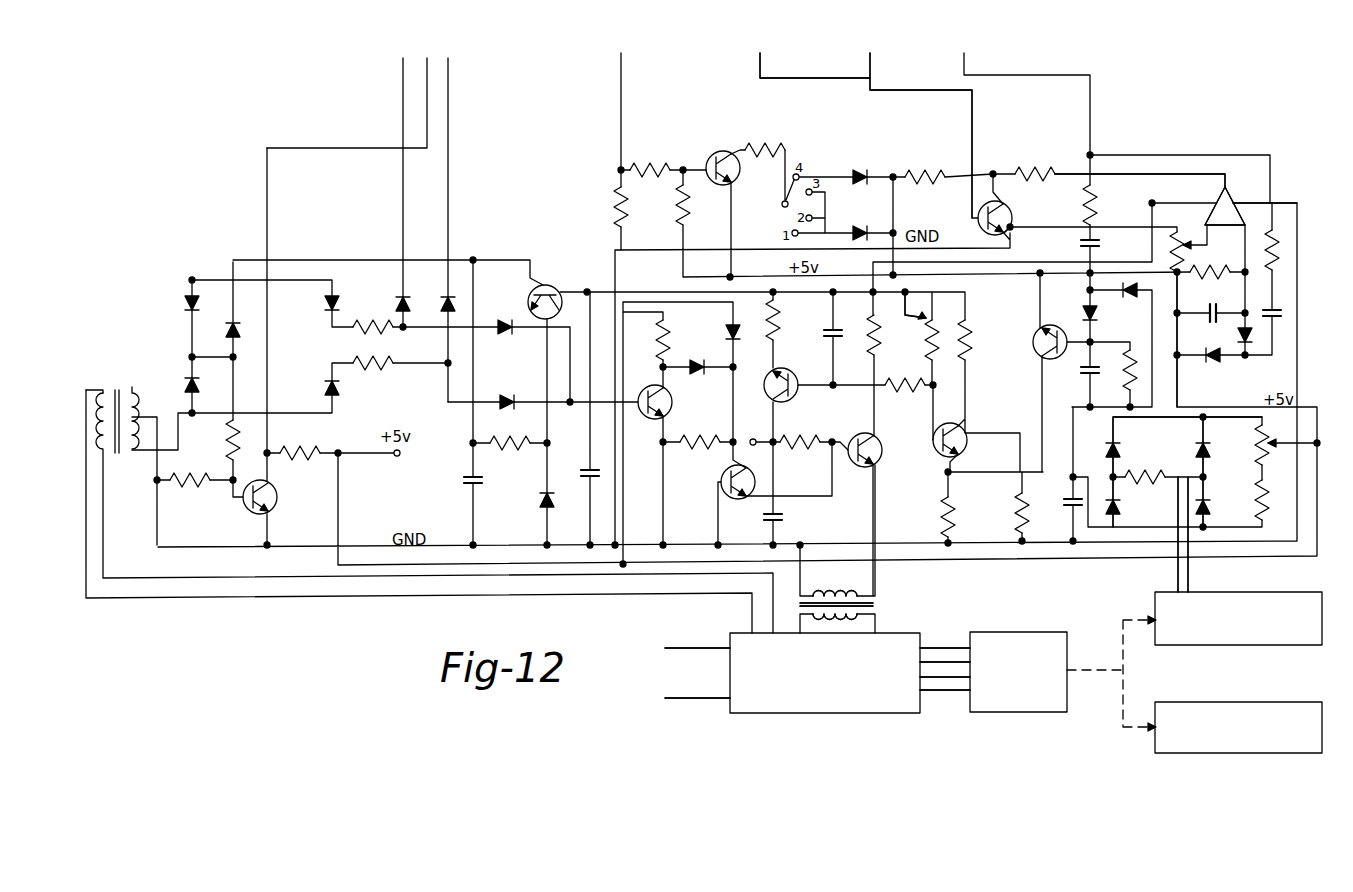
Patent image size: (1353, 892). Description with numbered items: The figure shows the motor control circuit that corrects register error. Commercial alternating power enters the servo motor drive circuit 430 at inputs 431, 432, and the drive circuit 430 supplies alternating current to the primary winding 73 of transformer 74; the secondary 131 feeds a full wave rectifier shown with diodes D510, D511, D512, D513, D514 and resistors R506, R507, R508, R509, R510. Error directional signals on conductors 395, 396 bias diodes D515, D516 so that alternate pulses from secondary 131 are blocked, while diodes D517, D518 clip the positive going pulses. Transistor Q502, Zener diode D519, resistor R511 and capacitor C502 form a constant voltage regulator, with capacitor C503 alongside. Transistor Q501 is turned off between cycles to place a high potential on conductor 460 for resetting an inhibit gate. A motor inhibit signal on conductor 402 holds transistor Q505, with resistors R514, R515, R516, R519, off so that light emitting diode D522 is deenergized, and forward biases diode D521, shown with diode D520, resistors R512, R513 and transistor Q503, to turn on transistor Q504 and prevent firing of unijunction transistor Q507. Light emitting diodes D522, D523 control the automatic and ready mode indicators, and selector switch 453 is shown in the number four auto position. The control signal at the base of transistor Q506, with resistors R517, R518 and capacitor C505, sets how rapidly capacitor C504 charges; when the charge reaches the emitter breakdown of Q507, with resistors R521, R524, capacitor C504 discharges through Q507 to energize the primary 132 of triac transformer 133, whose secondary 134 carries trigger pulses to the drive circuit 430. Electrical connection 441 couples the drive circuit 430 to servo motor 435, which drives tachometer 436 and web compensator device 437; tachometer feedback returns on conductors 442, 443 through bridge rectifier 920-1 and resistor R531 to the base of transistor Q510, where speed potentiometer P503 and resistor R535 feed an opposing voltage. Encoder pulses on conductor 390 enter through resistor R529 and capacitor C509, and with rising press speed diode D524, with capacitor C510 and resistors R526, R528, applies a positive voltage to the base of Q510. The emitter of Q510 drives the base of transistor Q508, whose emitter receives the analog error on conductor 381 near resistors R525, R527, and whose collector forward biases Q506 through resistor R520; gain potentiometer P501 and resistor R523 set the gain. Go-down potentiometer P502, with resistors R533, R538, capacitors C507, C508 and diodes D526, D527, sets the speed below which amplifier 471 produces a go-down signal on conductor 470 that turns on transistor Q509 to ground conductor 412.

The primary winding 73 is at (103, 400).
The transformer 74 is at (113, 380).
The transformer secondary 131 is at (134, 396).
The primary of triac transformer 132 is at (833, 594).
The triac transformer 133 is at (872, 605).
The transformer secondary winding 134 is at (872, 615).
The analog error control conductor 381 is at (964, 66).
The encoder pulse conductor 390 is at (760, 72).
The error directional conductor 395 is at (403, 88).
The error directional conductor 396 is at (448, 100).
The motor inhibit conductor 402 is at (622, 96).
The conductor 412 is at (870, 66).
The servo motor drive circuit 430 is at (773, 715).
The power input 431 is at (684, 645).
The power input 432 is at (683, 697).
The servo motor 435 is at (997, 713).
The tachometer 436 is at (1252, 593).
The web compensator device 437 is at (1187, 754).
The electrical connection 441 is at (947, 640).
The conductor 442 is at (1175, 574).
The conductor 443 is at (1190, 574).
The selector switch 453 is at (782, 206).
The conductor 460 is at (430, 148).
The conductor 470 is at (1112, 173).
The amplifier 471 is at (1197, 206).
The bridge rectifier 920-1 is at (1184, 472).
The diode D510 is at (190, 300).
The diode D511 is at (187, 380).
The diode D512 is at (232, 332).
The diode D513 is at (325, 308).
The diode D514 is at (326, 386).
The diode D515 is at (398, 304).
The diode D516 is at (453, 310).
The diode D517 is at (504, 332).
The diode D518 is at (520, 384).
The Zener diode D519 is at (541, 504).
The diode D520 is at (694, 362).
The diode D521 is at (730, 326).
The light emitting diode D522 is at (860, 170).
The light emitting diode D523 is at (860, 229).
The diode D524 is at (1086, 312).
The diode D526 is at (1216, 360).
The diode D527 is at (1248, 345).
The resistor R506 is at (180, 490).
The resistor R507 is at (233, 432).
The resistor R508 is at (302, 442).
The resistor R509 is at (364, 335).
The resistor R510 is at (360, 368).
The resistor R511 is at (505, 433).
The resistor R512 is at (688, 340).
The resistor R513 is at (698, 433).
The resistor R514 is at (740, 147).
The resistor R515 is at (616, 208).
The resistor R516 is at (650, 165).
The resistor R517 is at (796, 318).
The resistor R518 is at (798, 433).
The resistor R519 is at (681, 224).
The resistor R520 is at (898, 392).
The resistor R521 is at (897, 333).
The resistor R523 is at (911, 343).
The resistor R524 is at (944, 510).
The resistor R525 is at (923, 165).
The resistor R526 is at (991, 350).
The resistor R527 is at (1031, 164).
The resistor R528 is at (1020, 510).
The resistor R529 is at (1100, 206).
The resistor R531 is at (1151, 464).
The resistor R533 is at (1198, 280).
The resistor R535 is at (1256, 506).
The resistor R538 is at (1274, 228).
The gain potentiometer P501 is at (935, 312).
The go-down potentiometer P502 is at (1186, 244).
The speed potentiometer P503 is at (1255, 447).
The capacitor C502 is at (460, 474).
The capacitor C503 is at (586, 470).
The capacitor C504 is at (784, 518).
The capacitor C505 is at (830, 332).
The capacitor C507 is at (1218, 328).
The capacitor C508 is at (1270, 325).
The capacitor C509 is at (1084, 246).
The capacitor C510 is at (1068, 506).
The transistor Q501 is at (278, 498).
The transistor Q502 is at (556, 284).
The transistor Q503 is at (676, 402).
The transistor Q504 is at (724, 478).
The transistor Q505 is at (712, 152).
The transistor Q506 is at (800, 398).
The unijunction transistor Q507 is at (880, 466).
The transistor Q508 is at (969, 447).
The transistor Q509 is at (1008, 226).
The transistor Q510 is at (1034, 332).